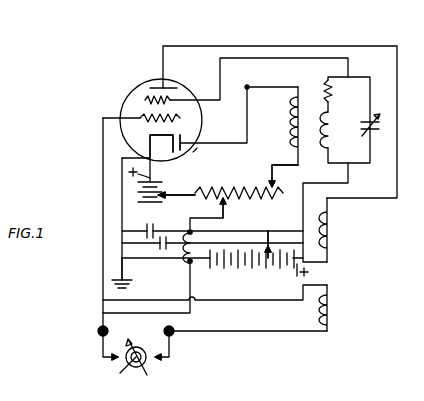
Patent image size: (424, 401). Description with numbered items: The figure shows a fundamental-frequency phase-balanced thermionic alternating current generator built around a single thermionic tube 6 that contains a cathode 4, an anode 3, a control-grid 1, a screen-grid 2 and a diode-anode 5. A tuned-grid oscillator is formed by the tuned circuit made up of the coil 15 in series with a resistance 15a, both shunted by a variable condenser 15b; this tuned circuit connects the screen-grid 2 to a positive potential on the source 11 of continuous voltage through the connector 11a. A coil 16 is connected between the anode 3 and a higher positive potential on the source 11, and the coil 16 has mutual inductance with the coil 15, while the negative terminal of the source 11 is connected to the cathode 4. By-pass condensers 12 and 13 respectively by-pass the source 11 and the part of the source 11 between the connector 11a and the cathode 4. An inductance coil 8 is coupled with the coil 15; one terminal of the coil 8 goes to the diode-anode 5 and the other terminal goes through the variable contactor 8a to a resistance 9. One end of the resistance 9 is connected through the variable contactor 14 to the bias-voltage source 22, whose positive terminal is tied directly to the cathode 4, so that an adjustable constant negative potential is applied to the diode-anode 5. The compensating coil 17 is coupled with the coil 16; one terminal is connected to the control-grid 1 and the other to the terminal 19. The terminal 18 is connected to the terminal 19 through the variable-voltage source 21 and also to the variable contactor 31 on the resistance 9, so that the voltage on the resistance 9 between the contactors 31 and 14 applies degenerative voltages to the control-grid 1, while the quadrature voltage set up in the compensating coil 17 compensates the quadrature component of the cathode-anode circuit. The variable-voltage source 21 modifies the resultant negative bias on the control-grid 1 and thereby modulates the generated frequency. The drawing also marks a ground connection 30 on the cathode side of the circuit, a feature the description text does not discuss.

The control-grid 1 is at (127, 117).
The screen-grid 2 is at (190, 100).
The anode 3 is at (138, 80).
The cathode 4 is at (173, 152).
The diode-anode 5 is at (190, 133).
The thermionic tube 6 is at (196, 150).
The inductance coil 8 is at (288, 128).
The variable contactor 8a is at (270, 168).
The resistance 9 is at (229, 189).
The source of continuous voltage 11 is at (258, 270).
The connector 11a is at (284, 236).
The by-pass condenser 12 is at (159, 245).
The by-pass condenser 13 is at (160, 221).
The variable contactor 14 is at (176, 196).
The coil 15 is at (333, 142).
The resistance 15a is at (325, 80).
The variable condenser 15b is at (332, 124).
The coil 16 is at (334, 220).
The compensating coil 17 is at (335, 297).
The terminal 18 is at (98, 331).
The terminal 19 is at (172, 336).
The variable-voltage source 21 is at (128, 369).
The bias-voltage source 22 is at (163, 185).
The ground connection 30 is at (130, 282).
The variable contactor 31 is at (226, 208).